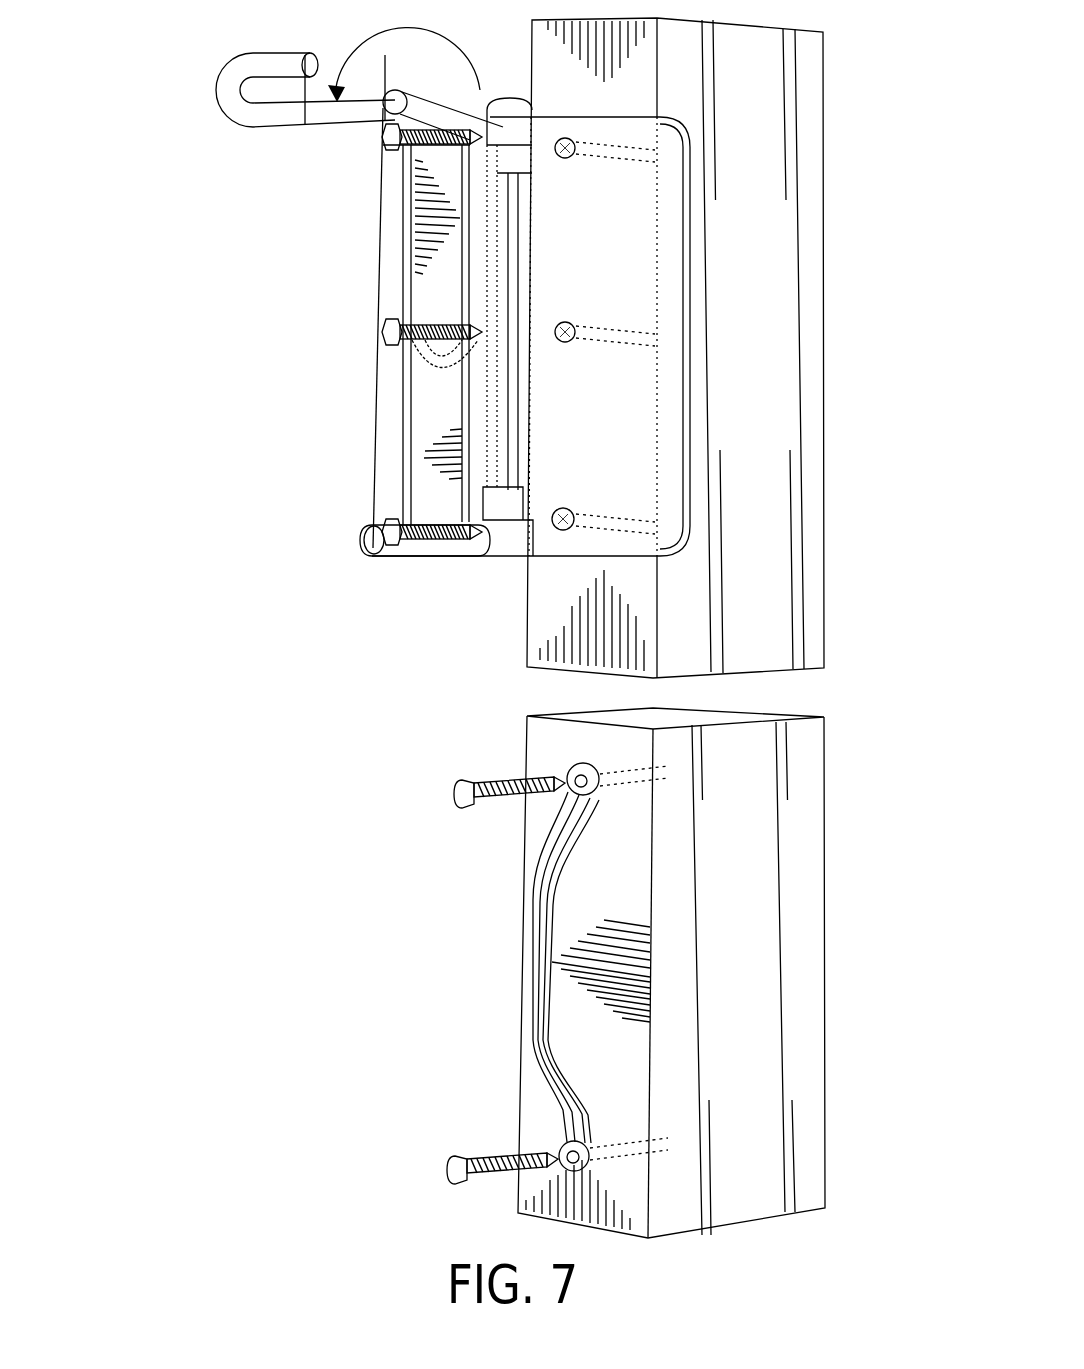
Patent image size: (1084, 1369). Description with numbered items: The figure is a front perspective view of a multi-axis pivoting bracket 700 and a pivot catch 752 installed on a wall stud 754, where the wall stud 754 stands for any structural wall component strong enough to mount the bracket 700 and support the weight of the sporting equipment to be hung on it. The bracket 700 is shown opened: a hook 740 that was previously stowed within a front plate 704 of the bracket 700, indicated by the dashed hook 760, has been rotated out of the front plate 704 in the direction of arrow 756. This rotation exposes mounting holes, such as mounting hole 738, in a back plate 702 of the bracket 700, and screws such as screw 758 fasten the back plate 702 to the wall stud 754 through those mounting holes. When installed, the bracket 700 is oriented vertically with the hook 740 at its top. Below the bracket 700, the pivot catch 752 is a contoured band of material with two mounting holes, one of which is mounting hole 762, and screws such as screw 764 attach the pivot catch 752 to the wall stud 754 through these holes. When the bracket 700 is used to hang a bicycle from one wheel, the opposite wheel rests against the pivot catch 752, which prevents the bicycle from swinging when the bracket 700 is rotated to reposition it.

The multi-axis pivoting bracket 700 is at (186, 60).
The back plate 702 is at (611, 260).
The front plate 704 is at (383, 248).
The mounting hole 738 is at (560, 512).
The hook 740 is at (280, 124).
The pivot catch 752 is at (513, 992).
The wall stud 754 is at (768, 345).
The arrow 756 is at (368, 40).
The screw 758 is at (430, 534).
The dashed hook 760 is at (425, 368).
The mounting hole 762 is at (578, 790).
The screw 764 is at (465, 806).